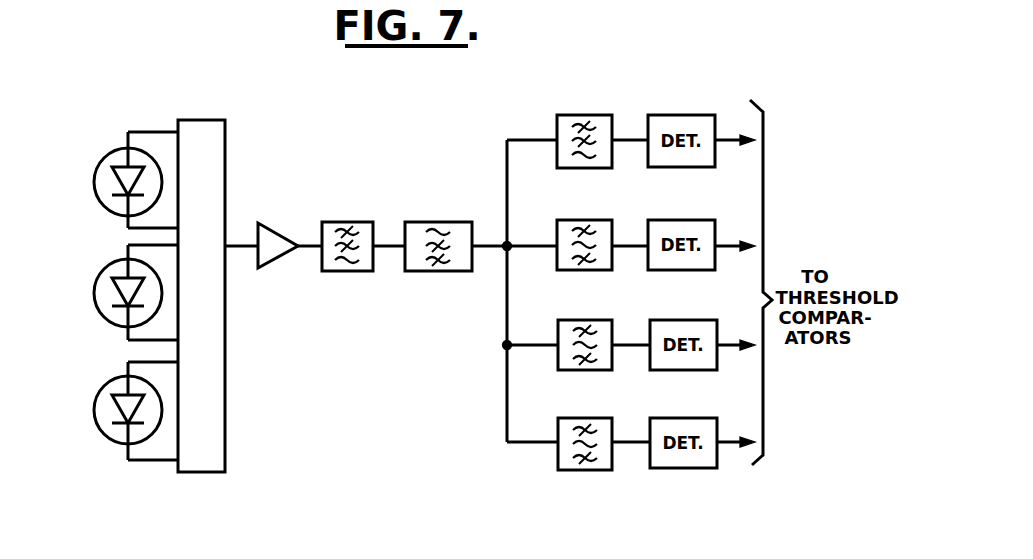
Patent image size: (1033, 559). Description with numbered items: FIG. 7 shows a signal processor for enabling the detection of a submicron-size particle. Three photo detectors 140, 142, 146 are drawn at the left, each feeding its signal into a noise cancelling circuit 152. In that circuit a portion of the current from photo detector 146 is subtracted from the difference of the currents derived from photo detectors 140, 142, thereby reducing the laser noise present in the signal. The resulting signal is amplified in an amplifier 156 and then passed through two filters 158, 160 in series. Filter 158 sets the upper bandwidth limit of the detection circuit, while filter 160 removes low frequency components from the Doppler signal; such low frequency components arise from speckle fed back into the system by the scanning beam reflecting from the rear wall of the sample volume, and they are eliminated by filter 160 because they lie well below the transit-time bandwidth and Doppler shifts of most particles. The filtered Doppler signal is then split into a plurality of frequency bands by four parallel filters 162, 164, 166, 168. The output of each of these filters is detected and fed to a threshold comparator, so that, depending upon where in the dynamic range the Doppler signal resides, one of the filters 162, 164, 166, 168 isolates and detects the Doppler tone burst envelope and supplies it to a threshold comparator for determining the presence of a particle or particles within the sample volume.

The photo detector 140 is at (110, 178).
The photo detector 142 is at (110, 290).
The photo detector 146 is at (108, 402).
The noise cancelling circuit 152 is at (196, 120).
The amplifier 156 is at (273, 222).
The filter 158 is at (348, 272).
The filter 160 is at (438, 272).
The filter 162 is at (556, 125).
The filter 164 is at (557, 235).
The filter 166 is at (557, 338).
The filter 168 is at (557, 437).